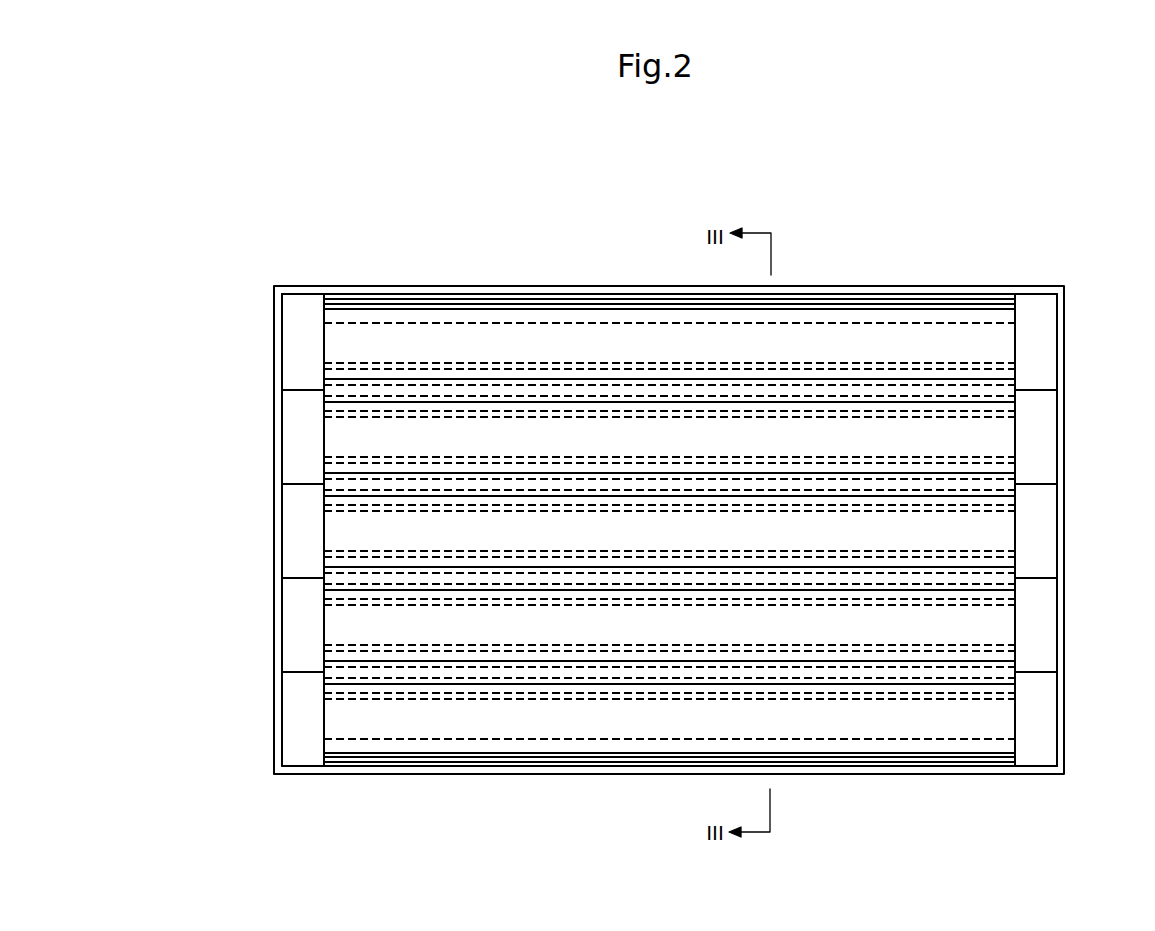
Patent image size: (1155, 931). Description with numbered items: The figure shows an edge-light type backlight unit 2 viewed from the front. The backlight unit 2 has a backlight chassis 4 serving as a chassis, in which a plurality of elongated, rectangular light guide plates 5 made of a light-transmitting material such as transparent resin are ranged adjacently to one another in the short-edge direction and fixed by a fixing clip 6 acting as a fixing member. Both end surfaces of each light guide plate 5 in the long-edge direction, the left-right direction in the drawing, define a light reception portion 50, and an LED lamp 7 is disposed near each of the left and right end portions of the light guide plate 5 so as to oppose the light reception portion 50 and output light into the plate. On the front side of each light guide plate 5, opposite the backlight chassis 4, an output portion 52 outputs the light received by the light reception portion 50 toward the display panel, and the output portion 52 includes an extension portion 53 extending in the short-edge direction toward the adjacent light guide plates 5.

The backlight unit 2 is at (304, 249).
The backlight chassis 4 is at (510, 772).
The light guide plate 5 is at (470, 432).
The fixing clip 6 is at (530, 580).
The LED lamp 7 is at (297, 317).
The light reception portion 50 is at (323, 343).
The output portion 52 is at (807, 333).
The extension portion 53 is at (643, 313).